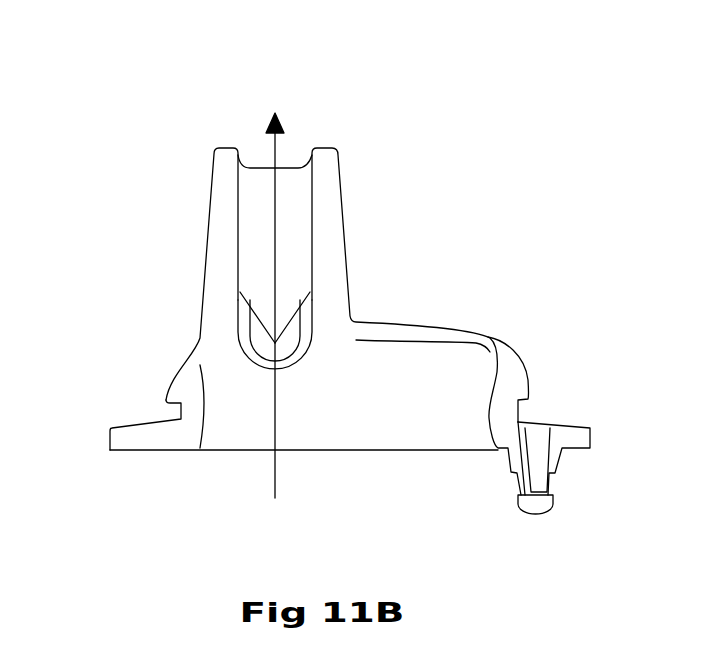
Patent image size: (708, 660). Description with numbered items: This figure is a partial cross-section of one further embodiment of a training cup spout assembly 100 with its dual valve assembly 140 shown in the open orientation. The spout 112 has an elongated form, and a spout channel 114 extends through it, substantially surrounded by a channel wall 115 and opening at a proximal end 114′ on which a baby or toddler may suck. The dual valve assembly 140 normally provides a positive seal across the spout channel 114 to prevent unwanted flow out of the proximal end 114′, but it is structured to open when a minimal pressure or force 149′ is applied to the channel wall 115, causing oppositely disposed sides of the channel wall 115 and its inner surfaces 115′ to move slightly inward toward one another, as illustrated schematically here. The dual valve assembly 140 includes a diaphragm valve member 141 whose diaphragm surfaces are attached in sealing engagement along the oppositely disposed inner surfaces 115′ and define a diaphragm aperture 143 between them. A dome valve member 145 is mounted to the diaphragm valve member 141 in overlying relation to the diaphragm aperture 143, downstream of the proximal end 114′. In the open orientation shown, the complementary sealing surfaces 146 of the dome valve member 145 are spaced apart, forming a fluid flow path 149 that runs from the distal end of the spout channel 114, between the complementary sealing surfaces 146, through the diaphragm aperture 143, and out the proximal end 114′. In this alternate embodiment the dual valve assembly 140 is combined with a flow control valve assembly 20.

The training cup spout assembly 100 is at (100, 160).
The spout 112 is at (208, 247).
The dual valve assembly 140 is at (352, 153).
The spout channel 114 is at (252, 180).
The proximal end 114′ is at (290, 170).
The pressure or force 149′ is at (193, 207).
The fluid flow path 149 is at (277, 326).
The channel wall 115 is at (345, 243).
The inner surfaces of channel wall 115′ is at (318, 252).
The diaphragm valve member 141 is at (238, 322).
The dome valve member 145 is at (324, 353).
The complementary sealing surfaces 146 is at (260, 364).
The diaphragm aperture 143 is at (277, 342).
The flow control valve assembly 20 is at (571, 483).